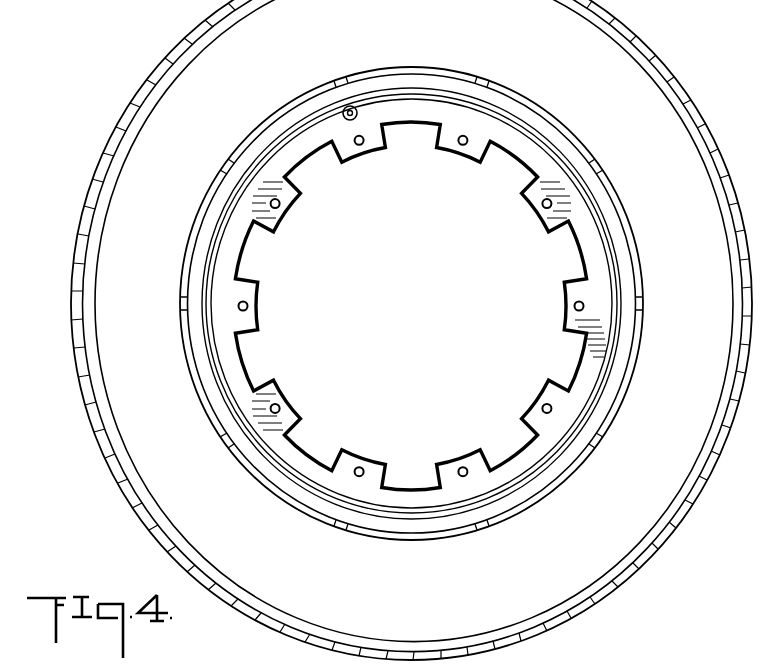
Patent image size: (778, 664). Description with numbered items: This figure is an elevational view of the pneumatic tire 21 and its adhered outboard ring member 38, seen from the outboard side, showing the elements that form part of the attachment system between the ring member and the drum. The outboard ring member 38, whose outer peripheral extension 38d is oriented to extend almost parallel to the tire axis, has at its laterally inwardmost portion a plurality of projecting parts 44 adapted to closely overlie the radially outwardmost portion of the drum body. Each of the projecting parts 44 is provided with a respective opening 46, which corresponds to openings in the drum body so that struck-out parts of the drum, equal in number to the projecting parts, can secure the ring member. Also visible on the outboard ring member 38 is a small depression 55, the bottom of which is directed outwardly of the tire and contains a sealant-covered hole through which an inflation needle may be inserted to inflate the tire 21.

The pneumatic tire 21 is at (99, 479).
The outboard ring member 38 is at (253, 486).
The outer peripheral extension 38d is at (365, 539).
The projecting parts 44 is at (349, 163).
The opening 46 is at (285, 405).
The depression 55 is at (351, 106).